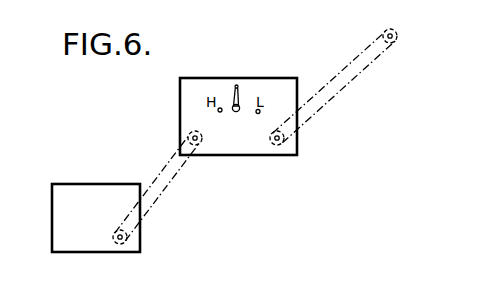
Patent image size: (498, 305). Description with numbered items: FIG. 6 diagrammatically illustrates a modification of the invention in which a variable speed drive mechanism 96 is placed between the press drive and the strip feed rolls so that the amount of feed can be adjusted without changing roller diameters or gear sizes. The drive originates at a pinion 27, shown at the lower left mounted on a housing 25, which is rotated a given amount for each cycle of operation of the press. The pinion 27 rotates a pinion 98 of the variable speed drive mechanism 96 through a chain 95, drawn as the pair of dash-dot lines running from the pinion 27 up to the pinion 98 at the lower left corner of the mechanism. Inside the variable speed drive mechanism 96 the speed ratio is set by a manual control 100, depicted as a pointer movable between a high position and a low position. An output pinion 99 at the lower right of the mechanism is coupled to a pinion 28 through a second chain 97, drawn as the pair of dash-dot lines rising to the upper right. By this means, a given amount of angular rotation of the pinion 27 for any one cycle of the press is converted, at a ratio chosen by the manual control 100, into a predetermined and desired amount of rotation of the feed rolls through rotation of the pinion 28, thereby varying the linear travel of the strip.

The base unit housing 25 is at (52, 228).
The pinion 27 is at (109, 224).
The pinion 28 is at (398, 37).
The chain 95 is at (143, 213).
The variable speed drive mechanism 96 is at (186, 103).
The chain 97 is at (333, 90).
The pinion 98 is at (188, 140).
The output pinion 99 is at (276, 146).
The manual control 100 is at (234, 93).